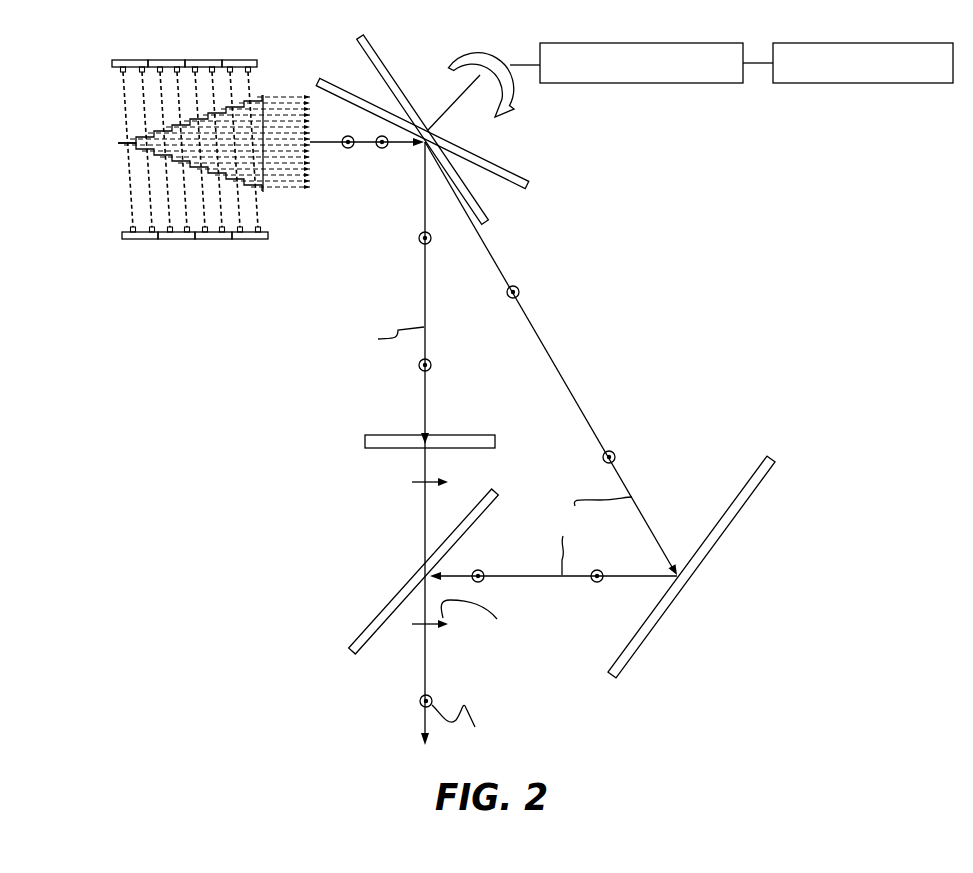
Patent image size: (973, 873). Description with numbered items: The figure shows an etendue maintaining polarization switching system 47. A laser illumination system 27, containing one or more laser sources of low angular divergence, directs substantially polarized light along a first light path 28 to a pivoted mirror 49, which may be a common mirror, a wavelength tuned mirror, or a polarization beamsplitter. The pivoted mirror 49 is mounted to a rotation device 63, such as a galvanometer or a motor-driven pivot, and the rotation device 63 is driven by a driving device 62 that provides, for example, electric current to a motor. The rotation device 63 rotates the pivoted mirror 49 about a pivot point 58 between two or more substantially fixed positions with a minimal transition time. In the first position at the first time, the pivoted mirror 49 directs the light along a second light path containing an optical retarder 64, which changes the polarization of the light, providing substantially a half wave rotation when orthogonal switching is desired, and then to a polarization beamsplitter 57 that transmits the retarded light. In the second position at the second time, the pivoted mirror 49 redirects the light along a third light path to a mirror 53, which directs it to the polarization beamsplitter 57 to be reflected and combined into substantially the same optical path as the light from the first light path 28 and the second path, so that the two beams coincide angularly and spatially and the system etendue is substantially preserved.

The laser illumination system 27 is at (100, 52).
The first light path 28 is at (369, 147).
The pivot point 58 is at (438, 121).
The pivoted mirror 49 is at (530, 192).
The rotation device 63 is at (697, 84).
The driving device 62 is at (925, 84).
The etendue maintaining polarization switching system 47 is at (918, 277).
The optical retarder 64 is at (382, 449).
The polarization beamsplitter 57 is at (369, 628).
The mirror 53 is at (771, 466).